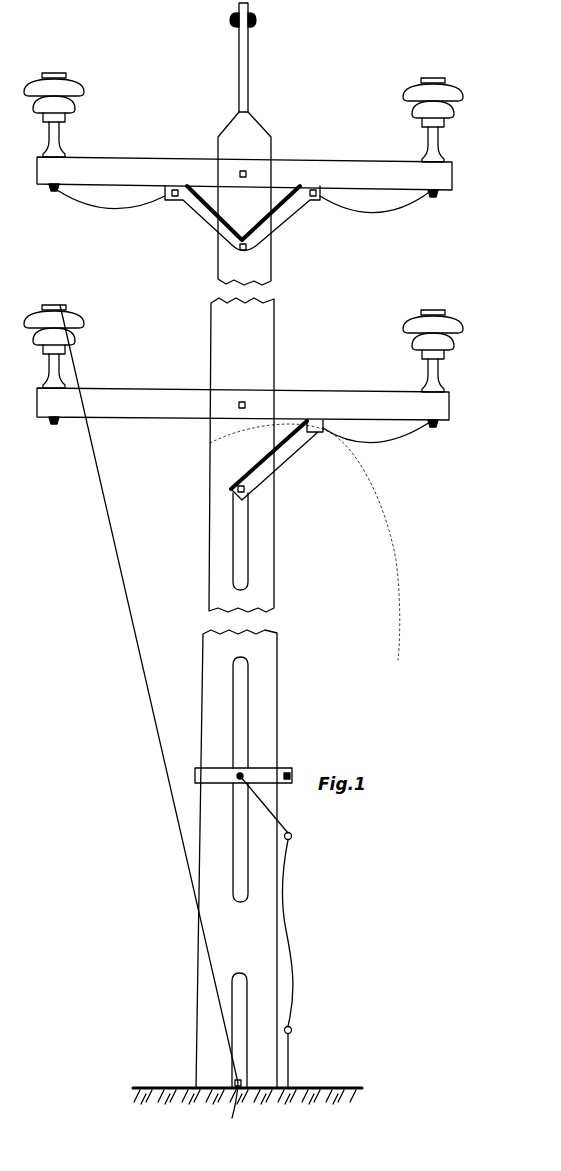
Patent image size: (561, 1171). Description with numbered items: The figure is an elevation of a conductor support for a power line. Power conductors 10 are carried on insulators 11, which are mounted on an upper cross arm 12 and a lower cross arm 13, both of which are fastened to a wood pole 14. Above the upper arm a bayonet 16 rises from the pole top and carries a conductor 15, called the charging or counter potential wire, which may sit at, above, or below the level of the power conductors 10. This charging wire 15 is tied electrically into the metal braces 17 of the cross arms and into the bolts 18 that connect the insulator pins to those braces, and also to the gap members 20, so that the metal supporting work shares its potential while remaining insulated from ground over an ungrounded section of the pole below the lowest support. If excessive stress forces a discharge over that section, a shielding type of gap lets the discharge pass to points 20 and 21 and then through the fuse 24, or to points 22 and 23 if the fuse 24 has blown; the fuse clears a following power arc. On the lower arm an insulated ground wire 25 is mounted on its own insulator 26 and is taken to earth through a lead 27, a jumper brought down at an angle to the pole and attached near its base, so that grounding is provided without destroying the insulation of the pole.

The power conductor 10 is at (56, 73).
The insulator 11 is at (70, 107).
The cross arm 12 is at (77, 167).
The cross arm 13 is at (325, 400).
The wood pole 14 is at (285, 548).
The charging or counter potential wire 15 is at (234, 19).
The bayonet 16 is at (245, 78).
The metal brace 17 is at (280, 222).
The bolt 18 is at (123, 208).
The gap member 20 is at (238, 566).
The gap point 21 is at (243, 677).
The gap point 22 is at (252, 880).
The gap point 23 is at (240, 995).
The fuse 24 is at (293, 937).
The insulated ground wire 25 is at (60, 305).
The insulator 26 is at (73, 332).
The lead or jumper 27 is at (124, 597).